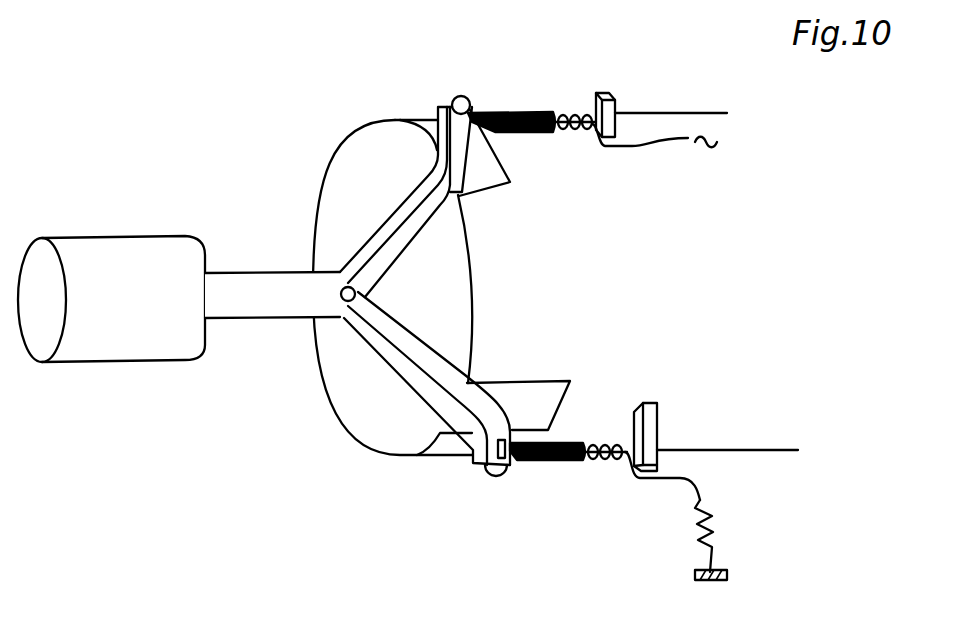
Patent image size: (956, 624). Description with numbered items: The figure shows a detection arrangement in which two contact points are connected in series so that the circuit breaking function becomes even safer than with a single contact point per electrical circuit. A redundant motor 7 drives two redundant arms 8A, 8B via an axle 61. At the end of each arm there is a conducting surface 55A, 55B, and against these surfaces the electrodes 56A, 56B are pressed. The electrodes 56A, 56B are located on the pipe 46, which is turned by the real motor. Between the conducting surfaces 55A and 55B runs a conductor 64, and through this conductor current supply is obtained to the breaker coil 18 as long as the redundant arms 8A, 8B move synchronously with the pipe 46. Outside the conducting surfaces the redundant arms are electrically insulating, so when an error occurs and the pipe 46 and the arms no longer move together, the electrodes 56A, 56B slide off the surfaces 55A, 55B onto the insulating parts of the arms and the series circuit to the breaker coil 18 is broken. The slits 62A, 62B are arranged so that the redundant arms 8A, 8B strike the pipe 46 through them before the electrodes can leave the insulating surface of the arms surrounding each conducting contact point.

The redundant motor 7 is at (120, 343).
The axle 61 is at (260, 287).
The conductor 64 is at (368, 272).
The redundant arm 8A is at (418, 237).
The redundant arm 8B is at (398, 350).
The slit 62A is at (502, 178).
The slit 62B is at (533, 393).
The conducting surface 55A is at (473, 102).
The conducting surface 55B is at (483, 473).
The electrode 56A is at (517, 113).
The electrode 56B is at (540, 467).
The pipe 46 is at (762, 433).
The breaker coil 18 is at (733, 507).